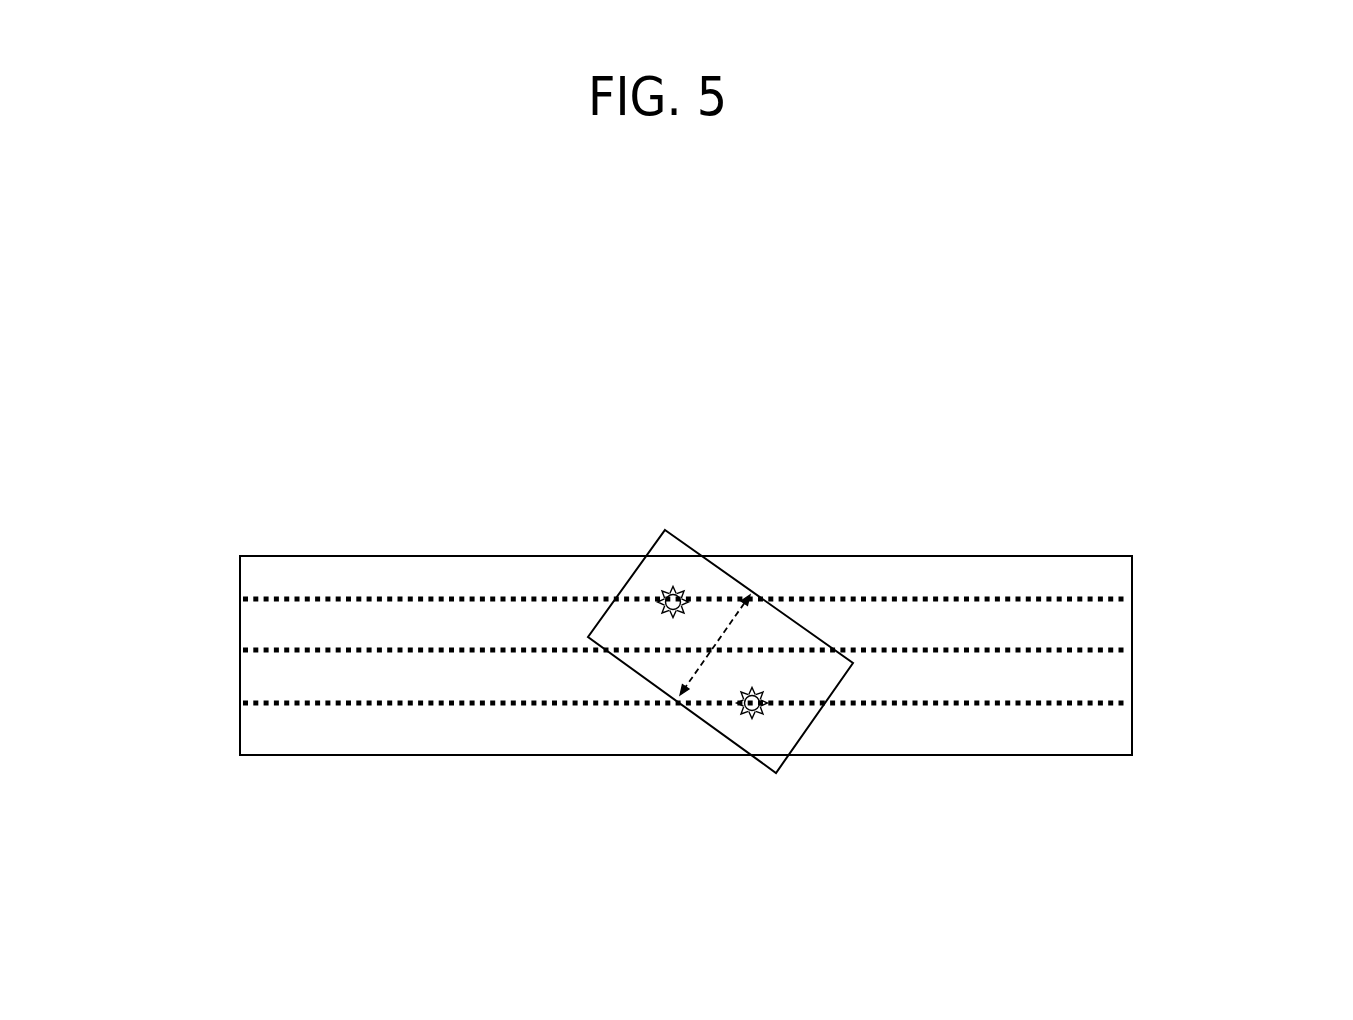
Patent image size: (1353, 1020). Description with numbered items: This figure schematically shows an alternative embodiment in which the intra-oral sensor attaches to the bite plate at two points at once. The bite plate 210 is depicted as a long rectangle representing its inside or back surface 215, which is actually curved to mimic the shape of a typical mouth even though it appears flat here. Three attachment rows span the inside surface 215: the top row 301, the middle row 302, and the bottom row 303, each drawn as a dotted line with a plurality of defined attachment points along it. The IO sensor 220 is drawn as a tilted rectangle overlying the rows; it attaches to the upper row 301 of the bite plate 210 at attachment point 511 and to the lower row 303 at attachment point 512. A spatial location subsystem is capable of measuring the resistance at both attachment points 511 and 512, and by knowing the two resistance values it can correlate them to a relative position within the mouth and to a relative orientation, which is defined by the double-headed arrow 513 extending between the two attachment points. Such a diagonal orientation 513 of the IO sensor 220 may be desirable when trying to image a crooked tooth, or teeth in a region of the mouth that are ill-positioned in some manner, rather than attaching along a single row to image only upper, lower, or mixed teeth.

The bite plate 210 is at (462, 553).
The inside surface 215 is at (1082, 683).
The IO sensor 220 is at (627, 580).
The top row 301 is at (273, 598).
The middle row 302 is at (280, 650).
The bottom row 303 is at (283, 703).
The attachment point 511 is at (674, 590).
The attachment point 512 is at (752, 706).
The double-headed arrow 513 is at (707, 657).